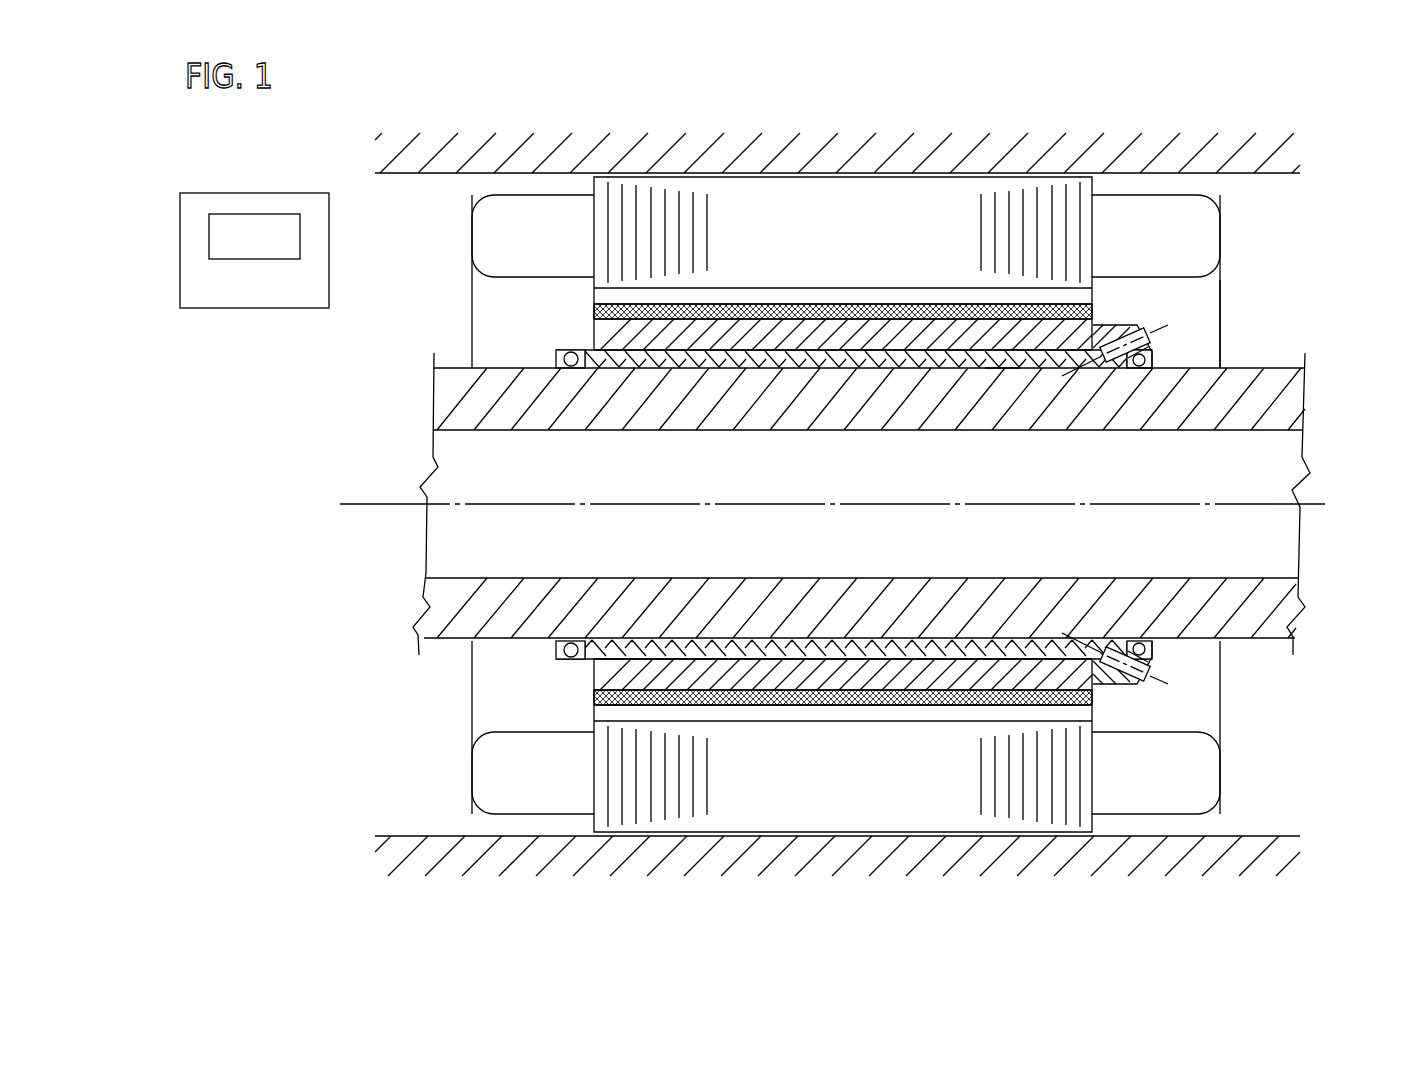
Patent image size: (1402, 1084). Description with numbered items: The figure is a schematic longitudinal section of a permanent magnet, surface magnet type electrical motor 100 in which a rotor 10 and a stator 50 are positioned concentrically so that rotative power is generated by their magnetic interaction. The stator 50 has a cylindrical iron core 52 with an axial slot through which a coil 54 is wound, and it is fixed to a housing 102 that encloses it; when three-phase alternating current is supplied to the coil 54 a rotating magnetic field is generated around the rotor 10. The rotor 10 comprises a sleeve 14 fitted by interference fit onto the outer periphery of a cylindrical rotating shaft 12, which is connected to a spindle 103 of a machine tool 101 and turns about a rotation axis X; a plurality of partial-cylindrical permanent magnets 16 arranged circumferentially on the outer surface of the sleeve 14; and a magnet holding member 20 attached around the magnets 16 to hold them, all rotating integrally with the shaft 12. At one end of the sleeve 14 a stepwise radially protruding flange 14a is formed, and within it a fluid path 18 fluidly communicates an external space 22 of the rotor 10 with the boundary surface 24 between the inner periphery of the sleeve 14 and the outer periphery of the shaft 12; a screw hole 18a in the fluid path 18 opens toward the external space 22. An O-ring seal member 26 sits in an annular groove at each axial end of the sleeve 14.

The rotor 10 is at (564, 323).
The rotating shaft 12 is at (1278, 388).
The sleeve 14 is at (1025, 358).
The flange 14a is at (1113, 330).
The permanent magnet 16 is at (718, 330).
The fluid path 18 is at (1182, 391).
The screw hole 18a is at (1108, 321).
The magnet holding member 20 is at (896, 303).
The external space 22 is at (1263, 236).
The boundary surface 24 is at (1005, 374).
The seal member 26 is at (556, 352).
The stator 50 is at (466, 194).
The iron core 52 is at (868, 243).
The coil 54 is at (472, 235).
The electrical motor 100 is at (275, 188).
The machine tool 101 is at (233, 308).
The housing 102 is at (1240, 150).
The spindle 103 is at (231, 213).
The rotation axis X is at (372, 500).